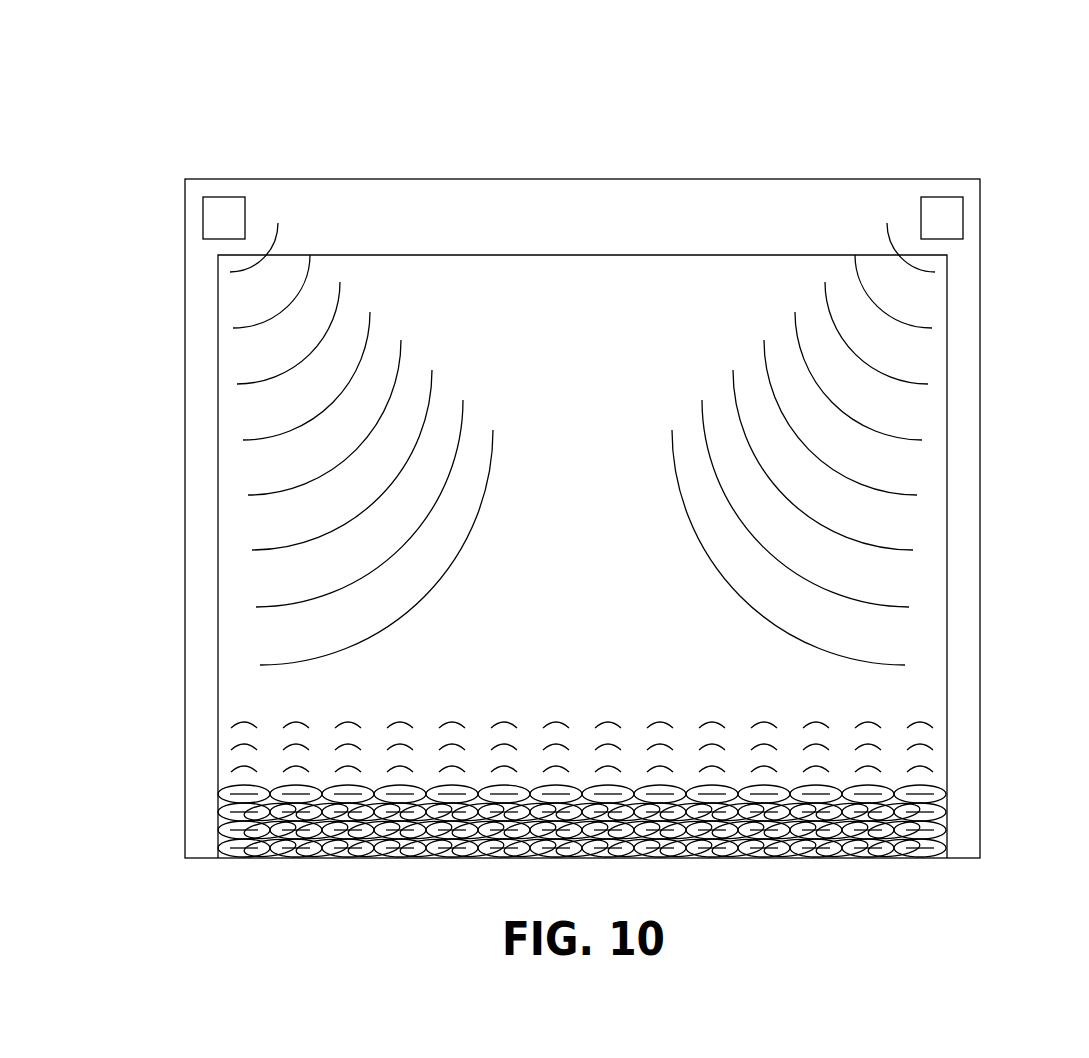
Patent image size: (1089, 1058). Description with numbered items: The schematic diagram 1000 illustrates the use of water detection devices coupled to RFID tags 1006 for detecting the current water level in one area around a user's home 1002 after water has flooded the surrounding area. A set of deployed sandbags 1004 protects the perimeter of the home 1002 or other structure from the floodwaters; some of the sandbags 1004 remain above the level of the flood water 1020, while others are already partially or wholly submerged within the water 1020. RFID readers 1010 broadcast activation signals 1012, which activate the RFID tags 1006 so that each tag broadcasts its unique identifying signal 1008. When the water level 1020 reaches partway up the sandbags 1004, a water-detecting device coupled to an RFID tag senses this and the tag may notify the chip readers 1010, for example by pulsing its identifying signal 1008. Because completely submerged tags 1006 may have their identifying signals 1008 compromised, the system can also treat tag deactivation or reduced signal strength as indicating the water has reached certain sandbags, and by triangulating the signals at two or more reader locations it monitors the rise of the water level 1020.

The schematic diagram 1000 is at (136, 104).
The home 1002 is at (732, 179).
The RFID readers 1010 is at (203, 220).
The activation signals 1012 is at (270, 380).
The unique identifying signal 1008 is at (235, 727).
The deployed sandbags 1004 is at (940, 790).
The RFID tags 1006 is at (935, 808).
The flood water 1020 is at (314, 848).